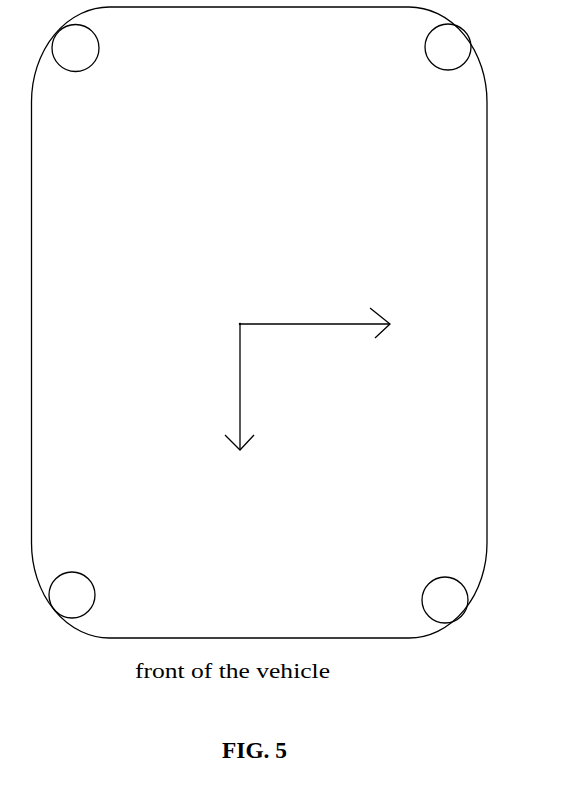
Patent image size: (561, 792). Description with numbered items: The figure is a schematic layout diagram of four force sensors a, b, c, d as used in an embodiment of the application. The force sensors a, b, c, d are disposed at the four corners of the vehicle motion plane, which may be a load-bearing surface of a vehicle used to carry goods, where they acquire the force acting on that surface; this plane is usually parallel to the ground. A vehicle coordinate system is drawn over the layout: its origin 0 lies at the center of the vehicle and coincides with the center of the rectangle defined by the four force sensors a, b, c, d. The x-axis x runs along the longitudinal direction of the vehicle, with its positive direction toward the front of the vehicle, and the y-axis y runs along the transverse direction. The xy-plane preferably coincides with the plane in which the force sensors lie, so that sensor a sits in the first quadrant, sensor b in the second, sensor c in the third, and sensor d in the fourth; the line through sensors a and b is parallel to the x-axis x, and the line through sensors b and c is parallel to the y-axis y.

The force sensor a is at (438, 578).
The force sensor b is at (439, 66).
The force sensor c is at (82, 70).
The force sensor d is at (85, 574).
The origin 0 is at (247, 314).
The x-axis x is at (246, 388).
The y-axis y is at (328, 328).